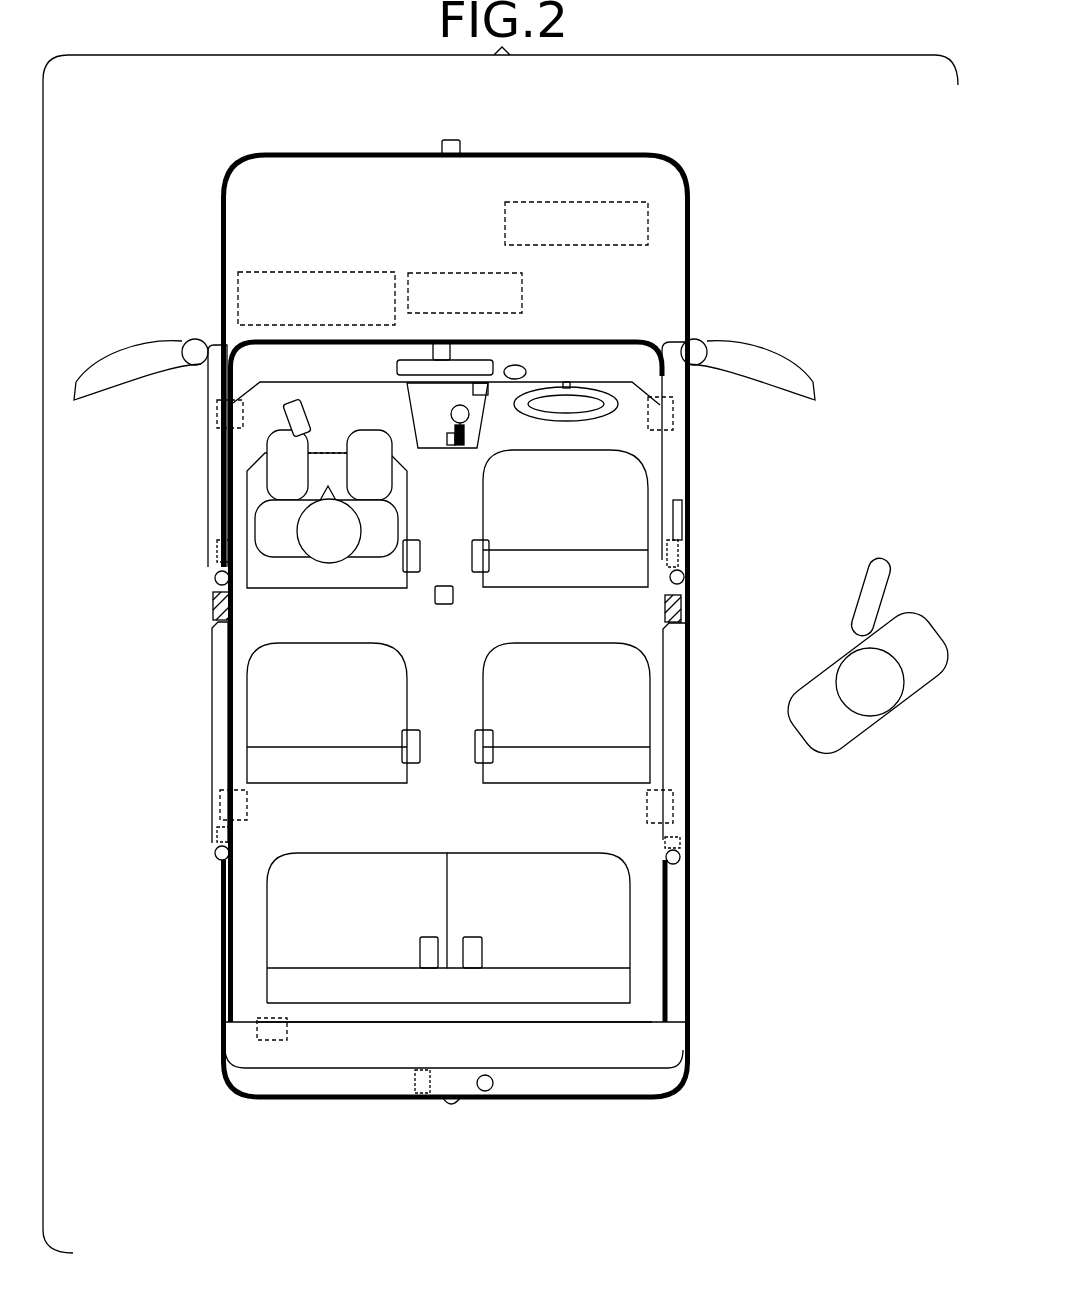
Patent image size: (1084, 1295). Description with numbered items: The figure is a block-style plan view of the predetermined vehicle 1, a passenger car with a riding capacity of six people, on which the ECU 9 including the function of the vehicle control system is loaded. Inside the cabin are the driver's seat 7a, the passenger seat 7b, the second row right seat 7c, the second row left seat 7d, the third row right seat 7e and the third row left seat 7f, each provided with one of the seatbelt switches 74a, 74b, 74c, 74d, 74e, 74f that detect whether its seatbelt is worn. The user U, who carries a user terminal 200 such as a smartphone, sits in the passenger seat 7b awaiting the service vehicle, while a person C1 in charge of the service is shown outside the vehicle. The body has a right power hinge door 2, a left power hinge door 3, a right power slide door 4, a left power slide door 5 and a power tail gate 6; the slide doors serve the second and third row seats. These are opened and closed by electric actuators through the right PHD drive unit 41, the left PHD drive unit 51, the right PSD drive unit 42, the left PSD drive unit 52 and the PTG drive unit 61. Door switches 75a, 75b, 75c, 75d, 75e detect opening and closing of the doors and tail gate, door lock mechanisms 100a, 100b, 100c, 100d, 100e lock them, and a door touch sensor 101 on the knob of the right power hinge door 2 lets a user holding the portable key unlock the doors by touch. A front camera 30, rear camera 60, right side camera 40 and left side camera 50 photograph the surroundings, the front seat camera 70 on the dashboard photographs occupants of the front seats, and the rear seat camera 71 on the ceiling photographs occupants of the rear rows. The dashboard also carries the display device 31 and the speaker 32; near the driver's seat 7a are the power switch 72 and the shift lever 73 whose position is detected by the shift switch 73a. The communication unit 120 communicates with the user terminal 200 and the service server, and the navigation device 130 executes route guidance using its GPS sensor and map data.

The predetermined vehicle 1 is at (562, 153).
The right power hinge door 2 is at (688, 483).
The left power hinge door 3 is at (208, 487).
The right power slide door 4 is at (688, 740).
The left power slide door 5 is at (212, 718).
The power tail gate 6 is at (628, 1068).
The ECU 9 is at (238, 298).
The front camera 30 is at (451, 139).
The display device 31 is at (397, 366).
The speaker 32 is at (527, 371).
The right side camera 40 is at (682, 608).
The right PHD drive unit 41 is at (673, 412).
The right PSD drive unit 42 is at (673, 805).
The left side camera 50 is at (213, 604).
The left PHD drive unit 51 is at (218, 412).
The left PSD drive unit 52 is at (220, 805).
The rear camera 60 is at (452, 1108).
The PTG drive unit 61 is at (270, 1040).
The front seat camera 70 is at (452, 351).
The rear seat camera 71 is at (444, 604).
The power switch 72 is at (485, 396).
The shift lever 73 is at (452, 412).
The shift switch 73a is at (451, 446).
The seatbelt switch 74a is at (480, 572).
The seatbelt switch 74b is at (412, 572).
The seatbelt switch 74c is at (482, 763).
The seatbelt switch 74d is at (415, 763).
The seatbelt switch 74e is at (482, 960).
The seatbelt switch 74f is at (429, 937).
The door switch 75a is at (685, 578).
The door switch 75b is at (215, 578).
The door switch 75c is at (680, 860).
The door switch 75d is at (216, 857).
The door switch 75e is at (488, 1092).
The driver's seat 7a is at (483, 525).
The passenger seat 7b is at (407, 490).
The second row right seat 7c is at (483, 700).
The second row left seat 7d is at (407, 672).
The third row right seat 7e is at (525, 853).
The third row left seat 7f is at (385, 853).
The door lock mechanism 100a is at (680, 553).
The door lock mechanism 100b is at (217, 552).
The door lock mechanism 100c is at (680, 842).
The door lock mechanism 100d is at (217, 835).
The door lock mechanism 100e is at (420, 1093).
The door touch sensor 101 is at (683, 522).
The communication unit 120 is at (572, 201).
The navigation device 130 is at (437, 272).
The user terminal 200 is at (310, 418).
The user U is at (300, 531).
The person in charge of the service C1 is at (893, 716).